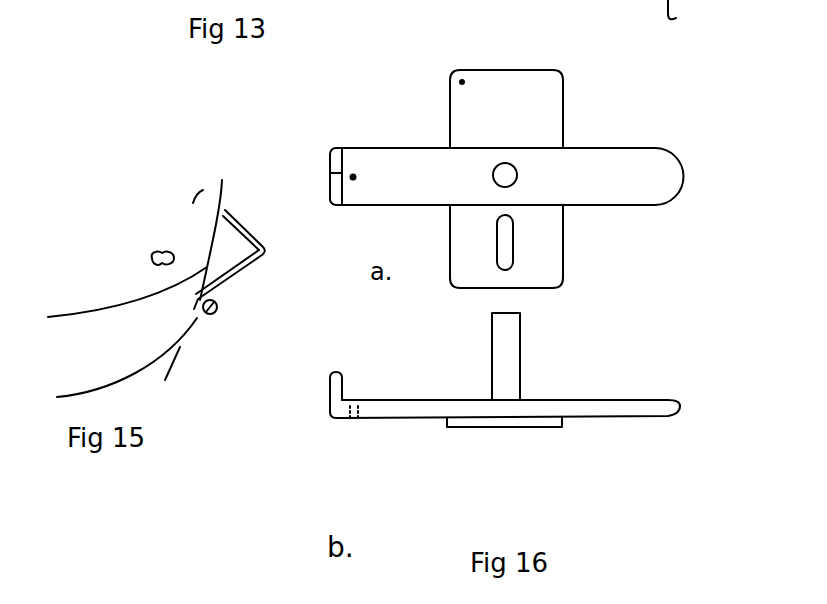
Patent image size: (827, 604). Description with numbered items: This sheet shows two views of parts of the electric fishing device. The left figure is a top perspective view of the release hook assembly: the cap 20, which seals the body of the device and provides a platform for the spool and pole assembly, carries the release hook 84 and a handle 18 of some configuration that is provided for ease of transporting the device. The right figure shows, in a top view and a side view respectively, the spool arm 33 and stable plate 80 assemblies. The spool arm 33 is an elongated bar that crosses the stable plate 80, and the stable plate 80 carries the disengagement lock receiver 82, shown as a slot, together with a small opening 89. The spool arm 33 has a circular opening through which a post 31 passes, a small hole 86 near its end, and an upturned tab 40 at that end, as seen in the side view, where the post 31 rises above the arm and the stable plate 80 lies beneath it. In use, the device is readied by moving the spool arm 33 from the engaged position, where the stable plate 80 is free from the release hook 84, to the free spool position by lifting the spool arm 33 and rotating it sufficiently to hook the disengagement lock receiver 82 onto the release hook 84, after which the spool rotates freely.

In FIG. 15, the handle 18 is at (264, 239).
In FIG. 15, the cap 20 is at (222, 180).
In FIG. 15, the release hook 84 is at (163, 247).
In FIG. 16, the spool arm 33 is at (660, 170).
In FIG. 16, the stable plate 80 is at (553, 115).
In FIG. 16, the post 31 is at (518, 182).
In FIG. 16, the disengagement lock receiver 82 is at (502, 258).
In FIG. 16, the hole 89 is at (465, 80).
In FIG. 16, the hole 86 is at (355, 175).
In FIG. 16, the tab 40 is at (328, 386).